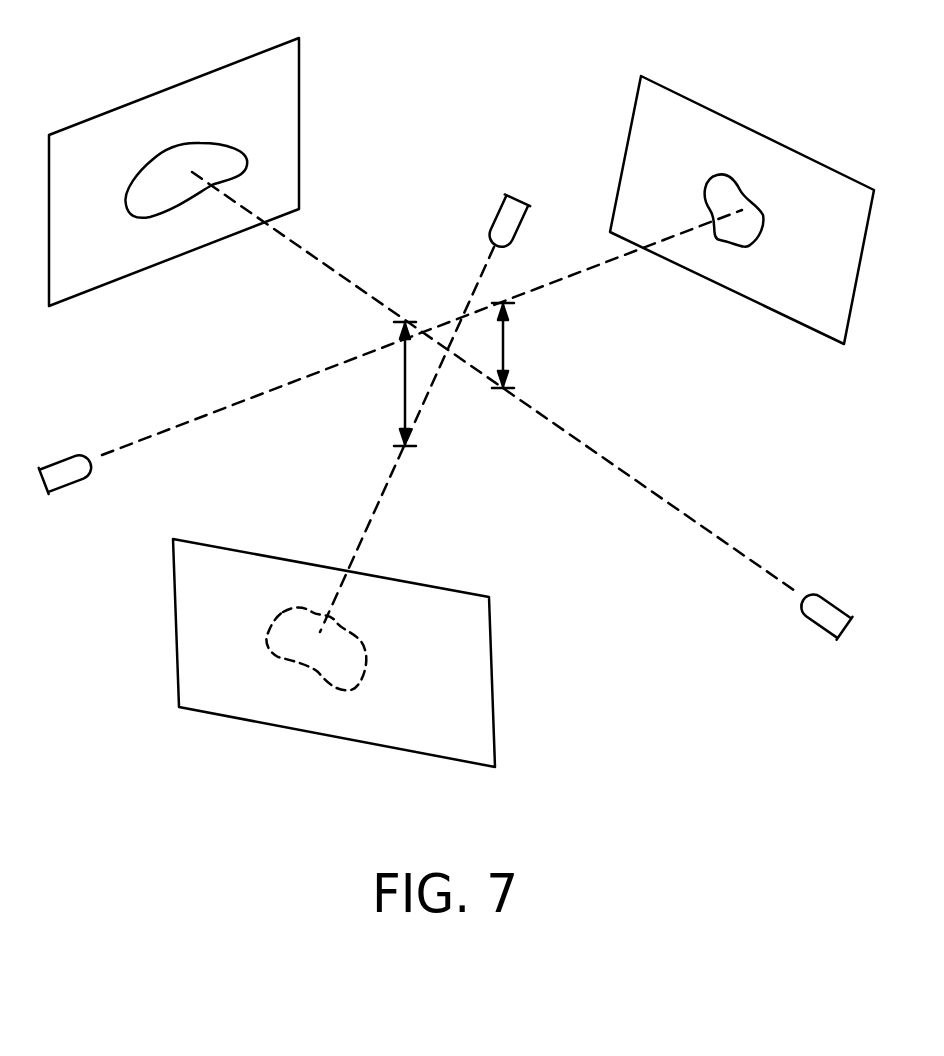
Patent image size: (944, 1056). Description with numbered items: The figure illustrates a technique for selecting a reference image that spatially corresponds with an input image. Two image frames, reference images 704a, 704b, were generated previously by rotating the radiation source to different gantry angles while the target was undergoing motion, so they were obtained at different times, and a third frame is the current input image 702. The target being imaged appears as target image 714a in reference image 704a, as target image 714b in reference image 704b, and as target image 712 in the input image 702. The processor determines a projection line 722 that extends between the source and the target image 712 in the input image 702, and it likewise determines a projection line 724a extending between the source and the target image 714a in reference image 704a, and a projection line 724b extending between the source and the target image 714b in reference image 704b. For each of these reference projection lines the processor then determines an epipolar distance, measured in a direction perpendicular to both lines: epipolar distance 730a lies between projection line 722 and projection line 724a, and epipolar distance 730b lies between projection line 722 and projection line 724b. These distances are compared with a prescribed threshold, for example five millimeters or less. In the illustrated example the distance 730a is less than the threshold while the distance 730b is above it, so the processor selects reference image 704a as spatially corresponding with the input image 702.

The input image 702 is at (193, 77).
The target image 712 is at (247, 163).
The reference image 704a is at (685, 92).
The target image 714a is at (753, 200).
The reference image 704b is at (176, 677).
The target image 714b is at (370, 668).
The projection line 722 is at (675, 508).
The projection line 724a is at (588, 267).
The projection line 724b is at (387, 490).
The epipolar distance 730a is at (503, 350).
The epipolar distance 730b is at (403, 398).